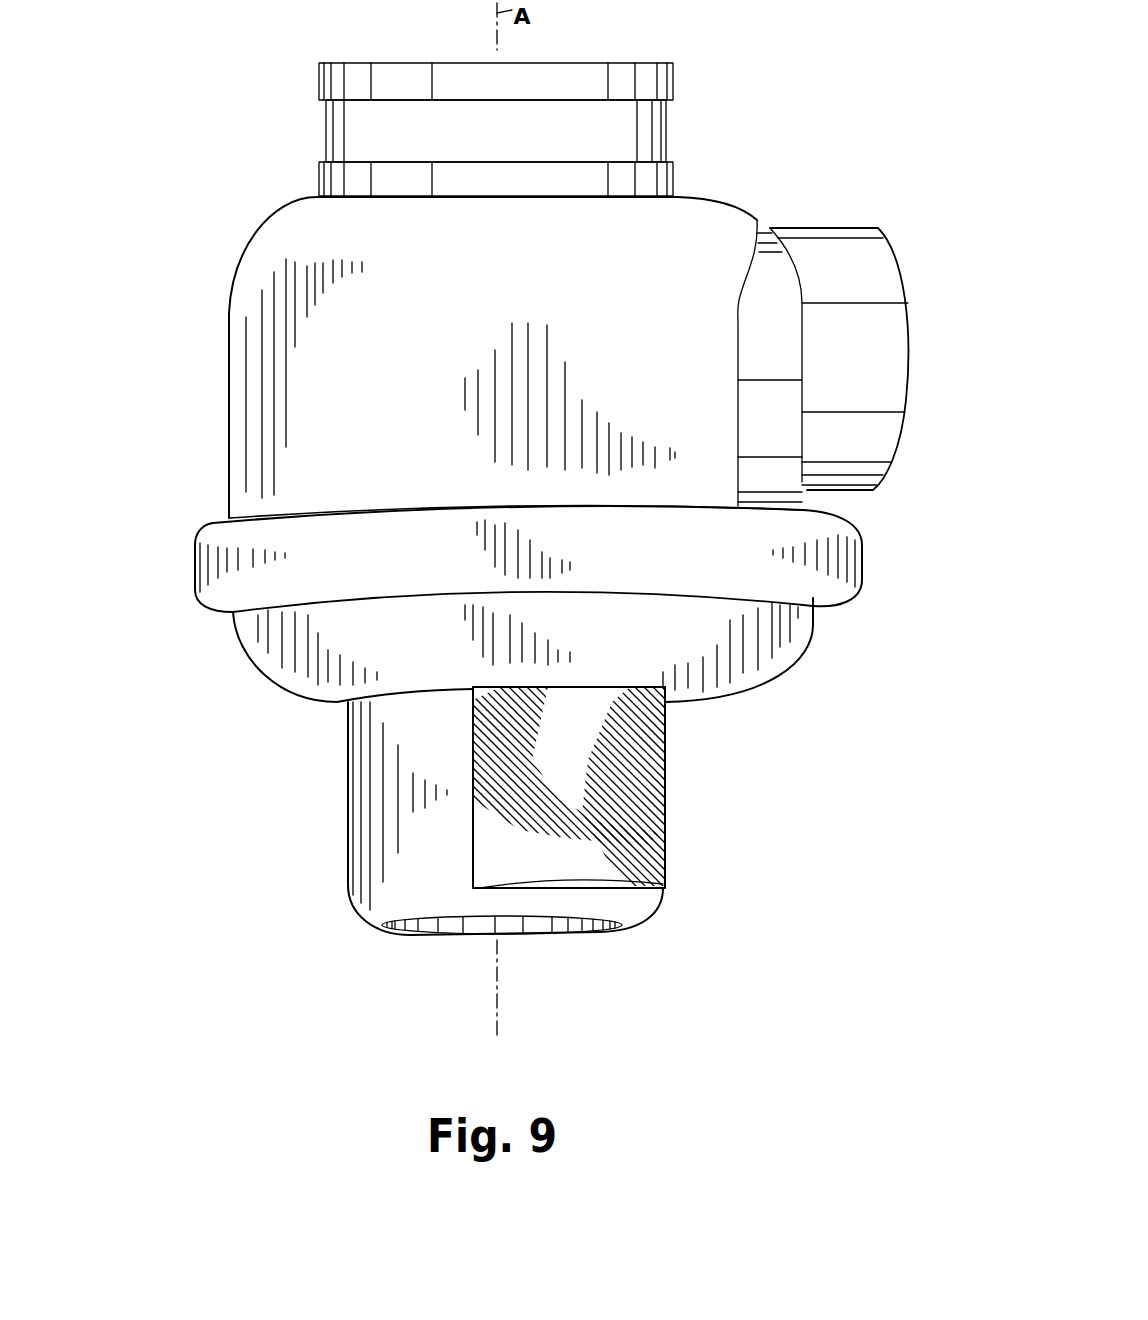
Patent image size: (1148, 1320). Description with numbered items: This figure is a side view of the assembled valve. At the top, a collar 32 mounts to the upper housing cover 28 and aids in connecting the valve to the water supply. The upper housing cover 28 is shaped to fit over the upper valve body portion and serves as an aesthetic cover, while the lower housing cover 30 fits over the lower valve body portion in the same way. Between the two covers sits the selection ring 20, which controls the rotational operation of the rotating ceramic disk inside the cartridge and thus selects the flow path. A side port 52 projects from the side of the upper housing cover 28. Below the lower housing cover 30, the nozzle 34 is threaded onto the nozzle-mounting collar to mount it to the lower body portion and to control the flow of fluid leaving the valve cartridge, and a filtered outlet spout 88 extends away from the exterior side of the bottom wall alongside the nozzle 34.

The selection ring 20 is at (202, 562).
The upper housing cover 28 is at (234, 289).
The lower housing cover 30 is at (257, 663).
The collar 32 is at (333, 125).
The nozzle 34 is at (355, 855).
The side port 52 is at (898, 257).
The filtered outlet spout 88 is at (665, 837).